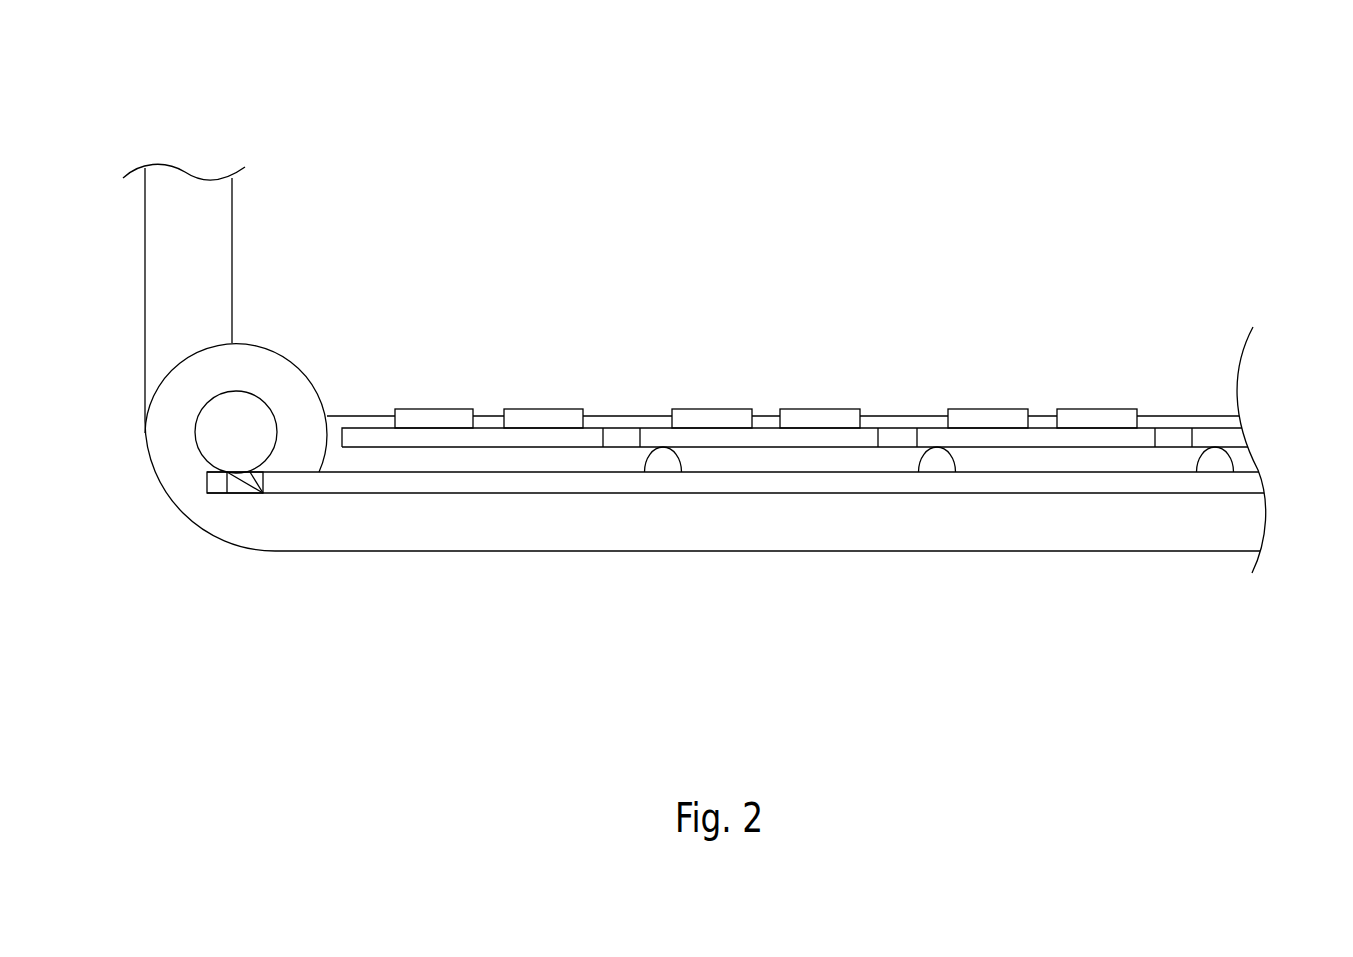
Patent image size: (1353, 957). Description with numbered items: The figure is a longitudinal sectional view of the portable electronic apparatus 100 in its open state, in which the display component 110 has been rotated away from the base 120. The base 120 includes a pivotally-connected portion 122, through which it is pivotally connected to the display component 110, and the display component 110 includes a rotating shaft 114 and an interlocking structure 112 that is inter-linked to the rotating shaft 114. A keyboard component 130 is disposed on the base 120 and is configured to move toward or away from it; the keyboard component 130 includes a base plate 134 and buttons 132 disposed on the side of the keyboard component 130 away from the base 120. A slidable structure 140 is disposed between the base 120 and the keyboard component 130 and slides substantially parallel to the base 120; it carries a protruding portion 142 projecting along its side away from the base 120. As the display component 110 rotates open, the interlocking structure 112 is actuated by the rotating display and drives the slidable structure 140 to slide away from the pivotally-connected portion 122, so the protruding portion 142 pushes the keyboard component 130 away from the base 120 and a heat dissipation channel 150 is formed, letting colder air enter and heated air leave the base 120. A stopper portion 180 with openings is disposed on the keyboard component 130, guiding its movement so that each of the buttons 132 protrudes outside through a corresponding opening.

The portable electronic apparatus 100 is at (1193, 160).
The display component 110 is at (157, 281).
The pivotally-connected portion 122 is at (157, 433).
The rotating shaft 114 is at (202, 443).
The interlocking structure 112 is at (215, 491).
The slidable structure 140 is at (239, 495).
The base 120 is at (445, 537).
The keyboard component 130 is at (787, 373).
The buttons 132 is at (437, 421).
The base plate 134 is at (462, 353).
The protruding portion 142 is at (663, 463).
The heat dissipation channel 150 is at (1174, 466).
The stopper portion 180 is at (1230, 416).